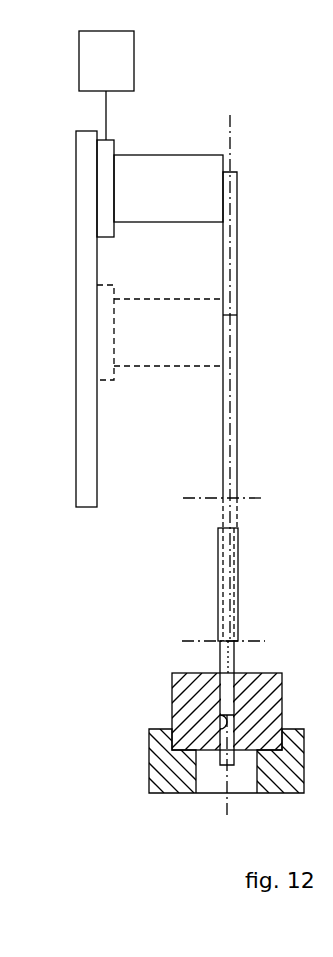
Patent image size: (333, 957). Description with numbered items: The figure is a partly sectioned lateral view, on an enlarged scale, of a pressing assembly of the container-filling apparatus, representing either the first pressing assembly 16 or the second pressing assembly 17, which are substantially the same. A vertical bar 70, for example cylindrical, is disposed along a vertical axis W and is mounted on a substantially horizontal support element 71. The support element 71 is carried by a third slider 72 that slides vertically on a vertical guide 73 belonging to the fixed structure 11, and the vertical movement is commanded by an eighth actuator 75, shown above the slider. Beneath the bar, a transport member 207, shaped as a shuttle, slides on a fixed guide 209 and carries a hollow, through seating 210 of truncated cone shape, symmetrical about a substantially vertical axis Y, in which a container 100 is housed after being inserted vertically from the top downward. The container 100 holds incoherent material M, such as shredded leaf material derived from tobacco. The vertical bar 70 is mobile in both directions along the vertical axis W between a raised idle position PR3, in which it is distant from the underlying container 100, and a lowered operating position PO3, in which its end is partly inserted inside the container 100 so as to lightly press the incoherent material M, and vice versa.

The fixed structure 11 is at (58, 237).
The first pressing assembly 16 is at (274, 65).
The second pressing assembly 17 is at (231, 88).
The vertical bar 70 is at (235, 270).
The support element 71 is at (168, 165).
The third slider 72 is at (107, 194).
The vertical guide 73 is at (86, 308).
The eighth actuator 75 is at (125, 61).
The container 100 is at (218, 548).
The transport member 207 is at (178, 688).
The fixed guide 209 is at (158, 758).
The seating 210 is at (221, 720).
The vertical axis W is at (232, 138).
The incoherent material M is at (237, 658).
The vertical axis Y is at (227, 812).
The raised idle position PR3 is at (200, 497).
The lowered operating position PO3 is at (200, 640).